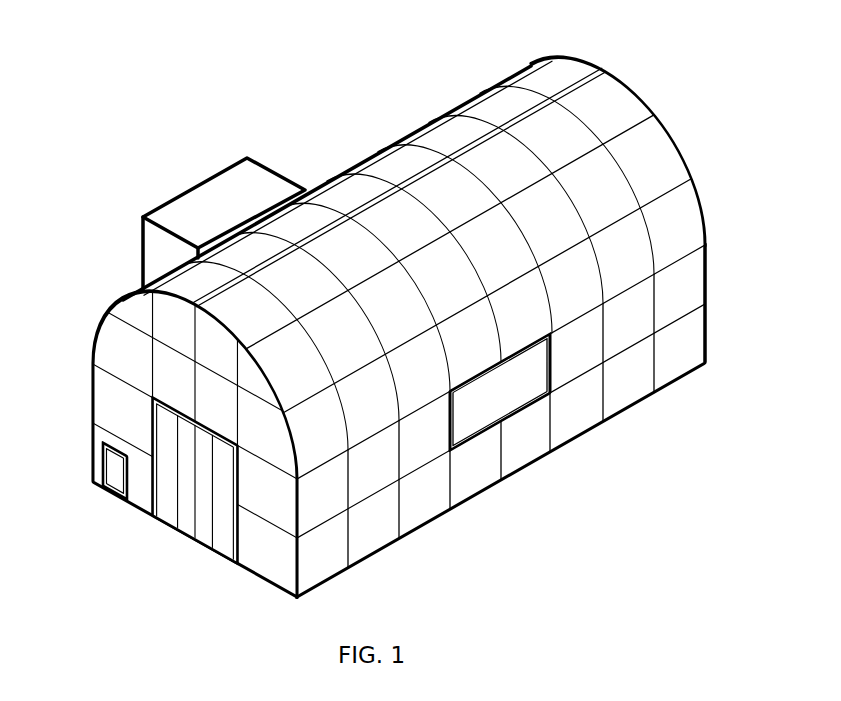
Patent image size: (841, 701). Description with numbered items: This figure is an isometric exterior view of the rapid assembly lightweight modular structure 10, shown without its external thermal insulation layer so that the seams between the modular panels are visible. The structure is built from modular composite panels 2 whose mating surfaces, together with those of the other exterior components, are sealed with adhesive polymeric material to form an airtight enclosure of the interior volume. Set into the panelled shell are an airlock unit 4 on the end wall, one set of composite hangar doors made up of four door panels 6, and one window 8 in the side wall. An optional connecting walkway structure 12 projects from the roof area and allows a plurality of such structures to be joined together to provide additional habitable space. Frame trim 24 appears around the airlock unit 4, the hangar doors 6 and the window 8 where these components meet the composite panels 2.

The modular composite panels 2 is at (677, 220).
The rapid assembly lightweight modular structure 10 is at (565, 97).
The connecting walkway structure 12 is at (183, 215).
The airlock unit 4 is at (115, 474).
The door panels 6 is at (187, 492).
The window 8 is at (507, 388).
The frame 24 is at (103, 463).